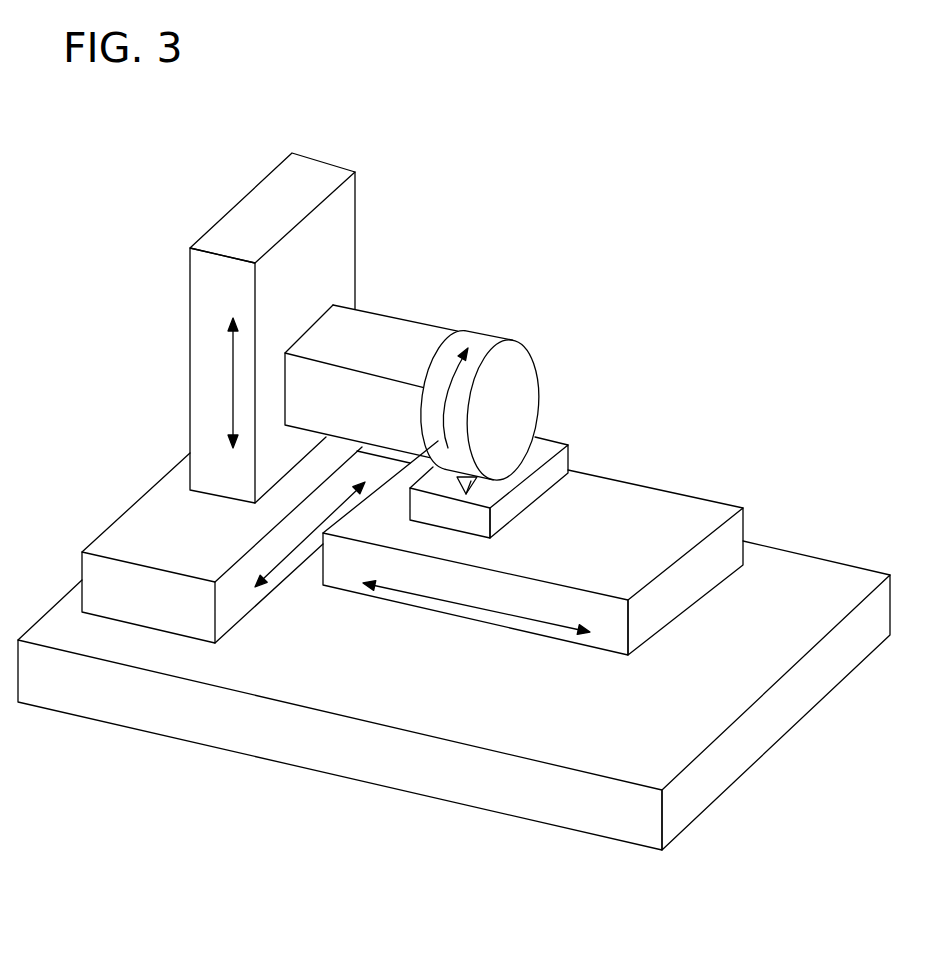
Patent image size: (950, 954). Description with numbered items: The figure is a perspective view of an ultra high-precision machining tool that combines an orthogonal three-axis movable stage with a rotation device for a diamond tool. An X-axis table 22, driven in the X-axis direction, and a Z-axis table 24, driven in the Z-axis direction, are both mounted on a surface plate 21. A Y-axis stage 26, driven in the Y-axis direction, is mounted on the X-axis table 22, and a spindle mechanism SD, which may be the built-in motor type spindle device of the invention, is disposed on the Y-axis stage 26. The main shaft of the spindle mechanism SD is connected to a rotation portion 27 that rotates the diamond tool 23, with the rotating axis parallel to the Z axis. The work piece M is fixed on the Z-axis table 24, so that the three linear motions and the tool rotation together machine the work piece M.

The surface plate 21 is at (353, 763).
The X-axis table 22 is at (90, 565).
The diamond tool 23 is at (470, 487).
The Z-axis table 24 is at (738, 530).
The Y-axis stage 26 is at (198, 295).
The rotation portion 27 is at (482, 340).
The spindle mechanism SD is at (405, 338).
The work piece M is at (550, 448).